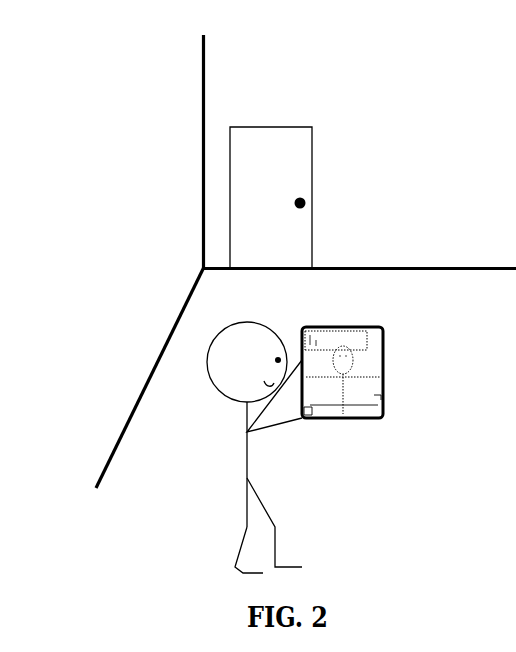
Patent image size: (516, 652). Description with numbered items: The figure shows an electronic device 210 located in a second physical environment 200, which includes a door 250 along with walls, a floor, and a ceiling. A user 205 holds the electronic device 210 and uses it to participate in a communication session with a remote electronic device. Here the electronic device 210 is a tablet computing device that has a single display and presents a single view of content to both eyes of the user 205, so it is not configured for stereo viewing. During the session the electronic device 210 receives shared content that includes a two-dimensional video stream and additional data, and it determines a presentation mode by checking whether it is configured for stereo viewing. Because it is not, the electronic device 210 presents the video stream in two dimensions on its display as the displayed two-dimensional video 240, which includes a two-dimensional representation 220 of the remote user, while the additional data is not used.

The physical environment 200 is at (142, 181).
The user 205 is at (247, 441).
The electronic device 210 is at (381, 350).
The 2D representation 220 is at (354, 365).
The 2D video 240 is at (372, 340).
The door 250 is at (266, 127).